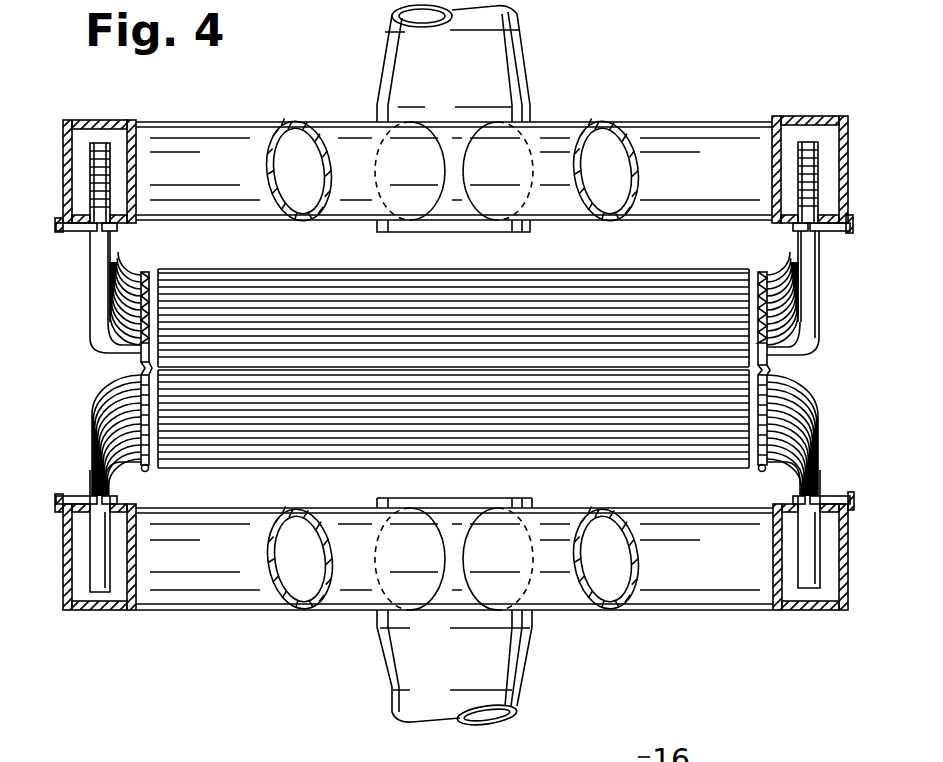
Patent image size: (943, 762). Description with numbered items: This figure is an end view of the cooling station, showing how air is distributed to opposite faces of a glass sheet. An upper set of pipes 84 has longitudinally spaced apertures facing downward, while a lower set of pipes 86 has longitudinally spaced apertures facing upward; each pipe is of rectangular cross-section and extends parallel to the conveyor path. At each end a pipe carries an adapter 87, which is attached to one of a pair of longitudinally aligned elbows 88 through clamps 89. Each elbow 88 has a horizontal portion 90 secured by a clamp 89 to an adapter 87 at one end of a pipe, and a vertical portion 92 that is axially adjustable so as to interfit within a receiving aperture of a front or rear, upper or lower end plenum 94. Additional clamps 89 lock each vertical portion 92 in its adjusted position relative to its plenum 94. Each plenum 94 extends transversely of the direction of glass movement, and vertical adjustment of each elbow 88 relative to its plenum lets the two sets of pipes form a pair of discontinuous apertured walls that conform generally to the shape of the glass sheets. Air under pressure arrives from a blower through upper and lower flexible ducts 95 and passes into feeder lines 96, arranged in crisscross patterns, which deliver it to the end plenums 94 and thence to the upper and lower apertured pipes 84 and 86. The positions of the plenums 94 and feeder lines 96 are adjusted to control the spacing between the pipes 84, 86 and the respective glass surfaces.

The upper set of pipes 84 is at (633, 278).
The lower set of pipes 86 is at (623, 448).
The adapter 87 is at (752, 366).
The elbow 88 is at (85, 387).
The clamp 89 is at (145, 274).
The horizontal portion 90 is at (135, 352).
The vertical portion 92 is at (100, 278).
The end plenum 94 is at (78, 120).
The flexible duct 95 is at (505, 25).
The feeder line 96 is at (345, 135).